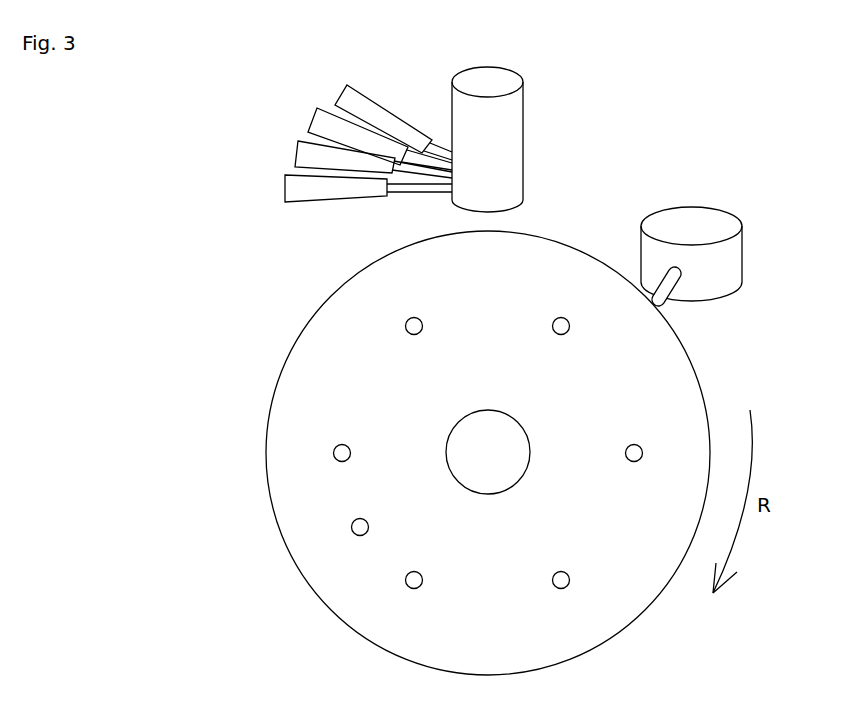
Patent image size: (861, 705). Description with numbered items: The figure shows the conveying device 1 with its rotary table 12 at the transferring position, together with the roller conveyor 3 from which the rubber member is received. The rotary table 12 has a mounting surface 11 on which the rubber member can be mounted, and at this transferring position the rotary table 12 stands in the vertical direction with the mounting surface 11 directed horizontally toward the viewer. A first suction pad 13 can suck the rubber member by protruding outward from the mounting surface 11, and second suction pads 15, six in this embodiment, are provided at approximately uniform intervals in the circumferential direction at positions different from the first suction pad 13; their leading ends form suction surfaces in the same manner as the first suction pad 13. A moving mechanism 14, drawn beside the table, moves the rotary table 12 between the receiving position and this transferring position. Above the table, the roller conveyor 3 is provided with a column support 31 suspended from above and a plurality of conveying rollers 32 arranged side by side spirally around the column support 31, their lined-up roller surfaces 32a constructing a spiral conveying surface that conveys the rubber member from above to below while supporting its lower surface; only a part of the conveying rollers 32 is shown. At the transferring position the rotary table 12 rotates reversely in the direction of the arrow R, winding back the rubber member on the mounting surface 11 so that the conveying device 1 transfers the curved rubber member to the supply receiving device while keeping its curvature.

The conveying device 1 is at (503, 453).
The mounting surface 11 is at (455, 453).
The rotary table 12 is at (296, 341).
The first suction pad 13 is at (352, 527).
The moving mechanism 14 is at (755, 258).
The second suction pad 15 is at (334, 452).
The roller conveyor 3 is at (409, 130).
The column support 31 is at (523, 147).
The conveying rollers 32 is at (341, 125).
The roller surfaces 32a is at (300, 139).